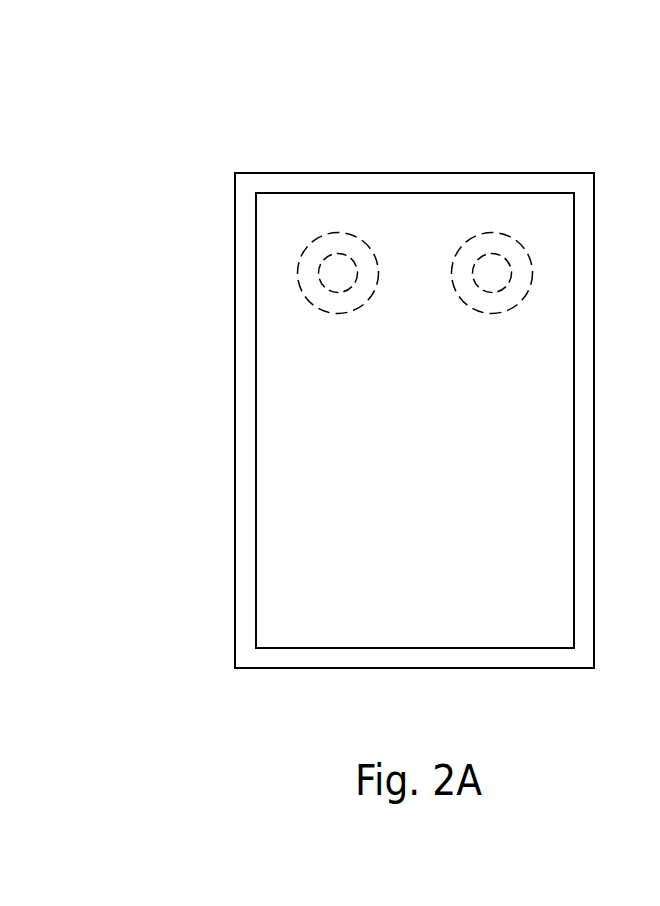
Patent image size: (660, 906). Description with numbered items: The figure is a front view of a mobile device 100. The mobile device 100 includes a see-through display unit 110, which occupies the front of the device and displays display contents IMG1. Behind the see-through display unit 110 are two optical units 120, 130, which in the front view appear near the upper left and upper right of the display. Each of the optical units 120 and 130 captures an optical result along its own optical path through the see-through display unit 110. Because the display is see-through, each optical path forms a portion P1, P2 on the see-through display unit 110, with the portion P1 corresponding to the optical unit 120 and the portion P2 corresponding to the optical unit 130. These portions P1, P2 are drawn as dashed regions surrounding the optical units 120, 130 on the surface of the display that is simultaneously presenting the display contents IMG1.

The mobile device 100 is at (222, 43).
The see-through display unit 110 is at (283, 382).
The optical unit 120 is at (318, 270).
The optical unit 130 is at (511, 270).
The portion P1 is at (315, 242).
The portion P2 is at (515, 242).
The display contents IMG1 is at (453, 509).